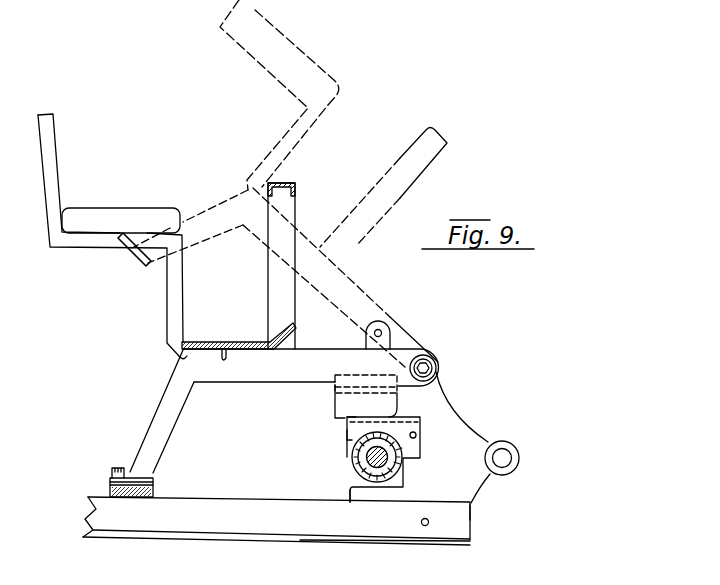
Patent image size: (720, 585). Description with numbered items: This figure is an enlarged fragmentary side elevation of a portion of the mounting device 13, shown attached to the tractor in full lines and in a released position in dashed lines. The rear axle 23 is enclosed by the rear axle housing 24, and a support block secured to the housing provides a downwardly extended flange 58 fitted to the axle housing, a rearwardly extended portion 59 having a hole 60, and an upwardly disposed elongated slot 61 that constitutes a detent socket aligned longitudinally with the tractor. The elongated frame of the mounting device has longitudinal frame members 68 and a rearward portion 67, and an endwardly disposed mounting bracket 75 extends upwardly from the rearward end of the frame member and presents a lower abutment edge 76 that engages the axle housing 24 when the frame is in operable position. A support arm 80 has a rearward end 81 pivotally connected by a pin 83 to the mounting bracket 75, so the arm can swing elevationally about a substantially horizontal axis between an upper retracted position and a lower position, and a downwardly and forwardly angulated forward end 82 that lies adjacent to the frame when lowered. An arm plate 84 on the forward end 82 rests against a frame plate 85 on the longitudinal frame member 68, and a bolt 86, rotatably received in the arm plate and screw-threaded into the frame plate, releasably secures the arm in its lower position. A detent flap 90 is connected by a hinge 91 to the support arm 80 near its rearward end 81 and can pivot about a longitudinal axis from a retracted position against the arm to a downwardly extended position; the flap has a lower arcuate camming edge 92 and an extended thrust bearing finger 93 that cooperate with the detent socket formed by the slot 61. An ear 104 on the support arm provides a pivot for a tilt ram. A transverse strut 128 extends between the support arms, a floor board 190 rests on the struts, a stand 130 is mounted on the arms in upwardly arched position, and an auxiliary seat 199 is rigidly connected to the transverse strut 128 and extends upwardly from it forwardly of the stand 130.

The auxiliary seat 199 is at (255, 58).
The forward ends 82 is at (188, 225).
The stand 130 is at (297, 192).
The ears 104 is at (378, 320).
The support arms 80 is at (342, 362).
The floor board 190 is at (139, 236).
The rearward ends 81 is at (428, 356).
The pins 83 is at (437, 364).
The hinges 91 is at (336, 377).
The detent flaps 90 is at (335, 402).
The thrust bearing fingers 93 is at (345, 420).
The arcuate camming edges 92 is at (378, 421).
The slots or grooves 61 is at (332, 429).
The rearwardly extended portions 59 is at (421, 418).
The holes 60 is at (416, 436).
The flanges 58 is at (350, 444).
The rear axle housing 24 is at (400, 470).
The rear axle 23 is at (370, 459).
The mounting brackets 75 is at (463, 434).
The longitudinal frame members 68 is at (92, 513).
The rearward portion 67 is at (420, 543).
The lower abutment edges 76 is at (350, 503).
The mounting device 13 is at (482, 521).
The arm plates 84 is at (150, 476).
The frame plates 85 is at (110, 482).
The bolts 86 is at (118, 464).
The transverse strut 128 is at (210, 352).